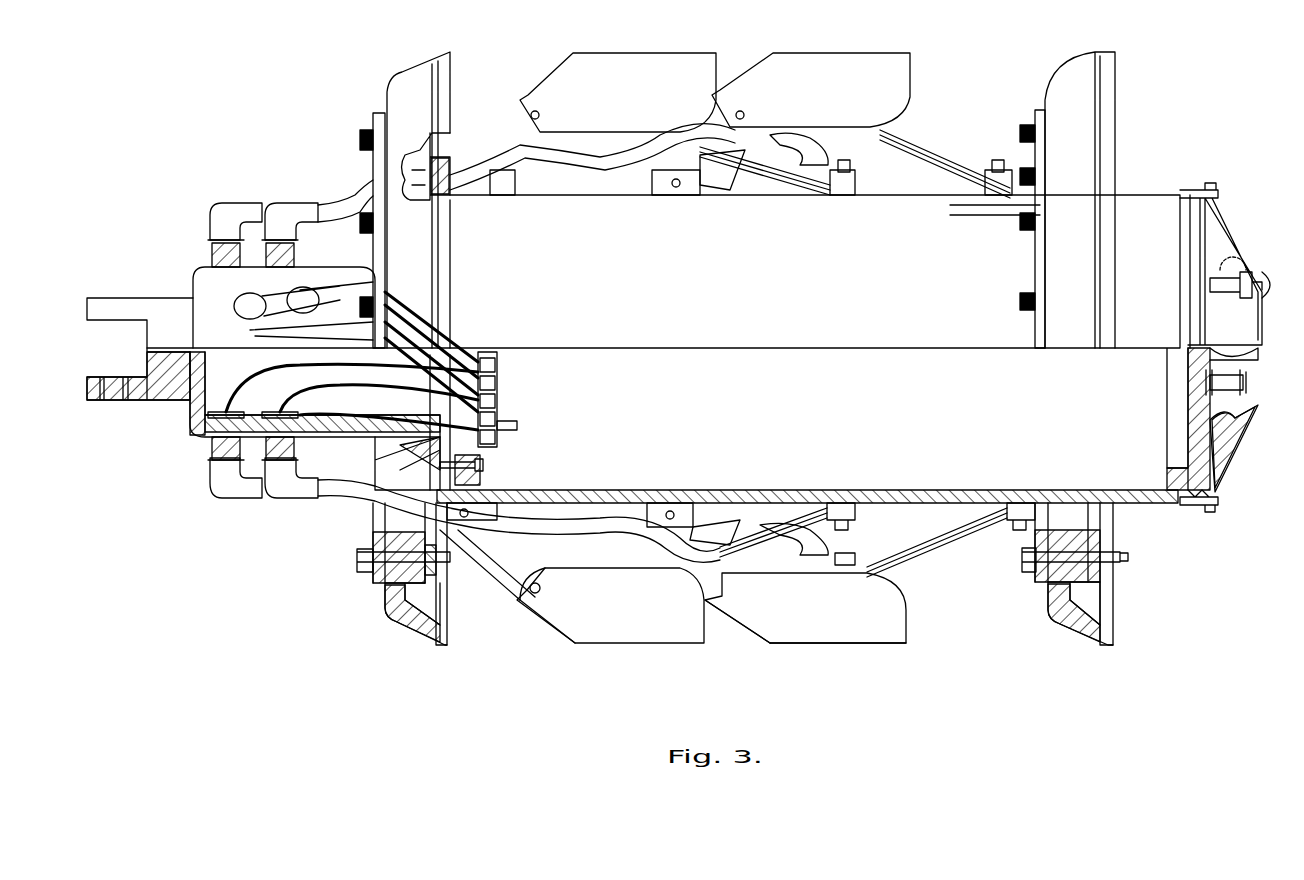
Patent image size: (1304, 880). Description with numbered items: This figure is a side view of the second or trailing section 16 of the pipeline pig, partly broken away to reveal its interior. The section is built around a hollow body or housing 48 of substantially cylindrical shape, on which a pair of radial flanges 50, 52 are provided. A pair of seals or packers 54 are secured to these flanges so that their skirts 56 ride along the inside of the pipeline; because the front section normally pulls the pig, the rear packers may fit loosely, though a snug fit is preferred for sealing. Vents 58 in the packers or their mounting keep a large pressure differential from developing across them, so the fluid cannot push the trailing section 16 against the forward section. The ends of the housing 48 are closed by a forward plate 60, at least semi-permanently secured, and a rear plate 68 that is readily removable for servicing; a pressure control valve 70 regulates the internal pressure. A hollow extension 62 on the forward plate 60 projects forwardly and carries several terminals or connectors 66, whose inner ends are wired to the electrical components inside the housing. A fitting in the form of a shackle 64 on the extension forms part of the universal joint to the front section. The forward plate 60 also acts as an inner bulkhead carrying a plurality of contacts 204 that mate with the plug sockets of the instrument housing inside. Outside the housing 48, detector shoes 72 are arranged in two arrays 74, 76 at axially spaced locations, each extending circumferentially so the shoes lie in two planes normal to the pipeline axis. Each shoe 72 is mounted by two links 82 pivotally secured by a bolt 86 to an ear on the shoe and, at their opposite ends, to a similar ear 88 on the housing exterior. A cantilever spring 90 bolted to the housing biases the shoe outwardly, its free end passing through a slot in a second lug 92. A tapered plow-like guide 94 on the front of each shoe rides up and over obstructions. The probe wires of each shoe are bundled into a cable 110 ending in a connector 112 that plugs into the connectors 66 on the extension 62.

The second or trailing section 16 is at (486, 655).
The hollow body or housing 48 is at (962, 225).
The radial flange 50 is at (448, 165).
The radial flange 52 is at (1040, 578).
The seals or packers 54 is at (410, 120).
The skirts 56 is at (433, 600).
The vents 58 is at (445, 540).
The forward plate 60 is at (407, 463).
The hollow extension 62 is at (193, 400).
The shackle 64 is at (155, 307).
The terminals or connectors 66 is at (211, 254).
The rear plate 68 is at (1250, 418).
The pressure control valve 70 is at (1250, 247).
The detector shoes 72 is at (628, 72).
The array of detector shoes 74 is at (556, 635).
The array of detector shoes 76 is at (812, 647).
The links 82 is at (503, 135).
The bolt 86 is at (541, 580).
The ear 88 is at (650, 185).
The spring 90 is at (920, 135).
The second lug 92 is at (848, 552).
The tapered guide 94 is at (738, 625).
The cable 110 is at (348, 195).
The connector 112 is at (238, 220).
The contacts 204 is at (515, 420).